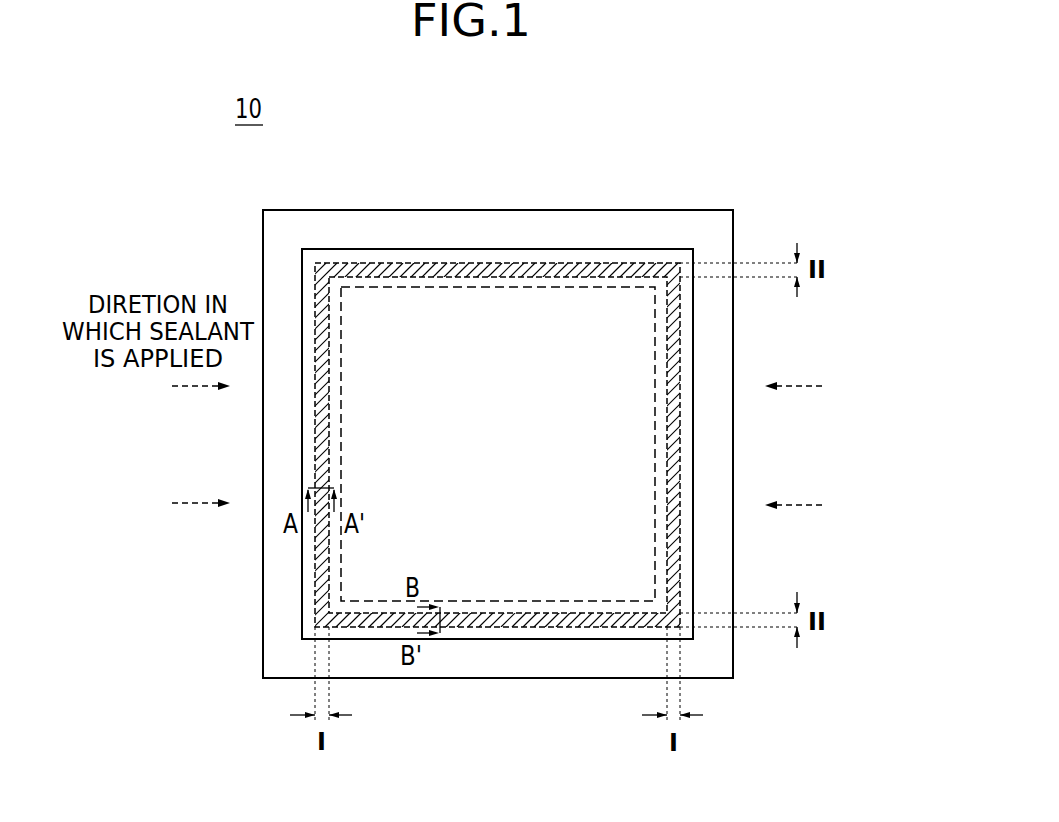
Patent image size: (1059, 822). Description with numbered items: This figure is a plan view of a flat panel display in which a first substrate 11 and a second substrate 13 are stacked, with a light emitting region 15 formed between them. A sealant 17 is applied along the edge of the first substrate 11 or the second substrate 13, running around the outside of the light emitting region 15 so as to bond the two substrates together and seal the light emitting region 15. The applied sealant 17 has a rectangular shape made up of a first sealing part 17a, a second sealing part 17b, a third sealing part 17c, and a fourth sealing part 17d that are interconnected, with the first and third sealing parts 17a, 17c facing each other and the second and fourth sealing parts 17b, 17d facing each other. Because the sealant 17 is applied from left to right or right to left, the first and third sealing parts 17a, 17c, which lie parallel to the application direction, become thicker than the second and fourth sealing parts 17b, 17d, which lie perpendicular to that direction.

The first substrate 11 is at (733, 221).
The second substrate 13 is at (631, 249).
The light emitting region 15 is at (614, 470).
The sealant 17 is at (310, 568).
The first sealing part 17a is at (386, 262).
The second sealing part 17b is at (673, 328).
The third sealing part 17c is at (493, 627).
The fourth sealing part 17d is at (320, 439).